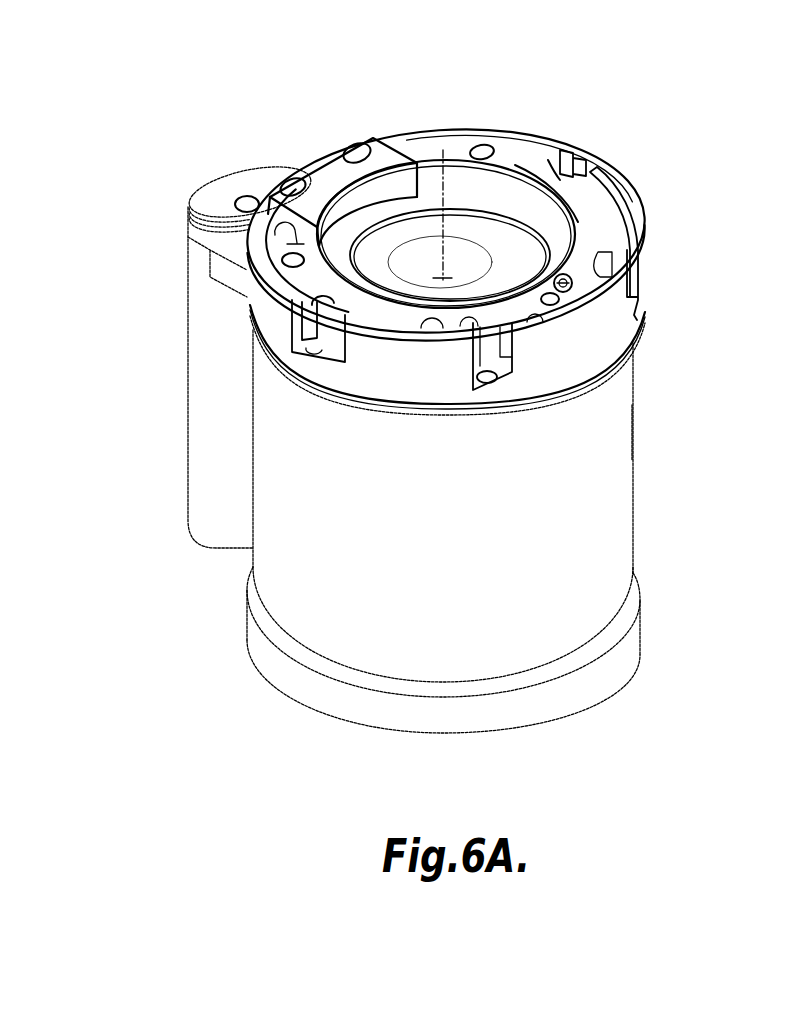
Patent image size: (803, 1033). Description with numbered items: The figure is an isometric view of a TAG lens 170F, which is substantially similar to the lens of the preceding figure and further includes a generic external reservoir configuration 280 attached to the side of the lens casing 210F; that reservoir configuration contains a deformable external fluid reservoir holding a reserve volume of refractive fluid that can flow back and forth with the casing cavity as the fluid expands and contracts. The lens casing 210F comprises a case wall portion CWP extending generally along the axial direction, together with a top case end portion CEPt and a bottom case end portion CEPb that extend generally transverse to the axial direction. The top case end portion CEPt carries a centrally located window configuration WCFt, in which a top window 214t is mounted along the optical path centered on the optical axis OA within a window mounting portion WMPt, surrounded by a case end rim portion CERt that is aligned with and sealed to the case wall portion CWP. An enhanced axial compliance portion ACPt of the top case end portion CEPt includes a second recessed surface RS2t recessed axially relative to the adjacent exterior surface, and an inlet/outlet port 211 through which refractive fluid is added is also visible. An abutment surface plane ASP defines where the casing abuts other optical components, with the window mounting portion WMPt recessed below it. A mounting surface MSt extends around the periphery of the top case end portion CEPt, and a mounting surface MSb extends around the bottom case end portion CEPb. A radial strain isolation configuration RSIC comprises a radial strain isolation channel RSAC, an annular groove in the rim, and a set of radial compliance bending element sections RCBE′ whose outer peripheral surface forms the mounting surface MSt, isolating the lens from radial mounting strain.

The TAG lens 170F is at (636, 68).
The window configuration WCFt is at (513, 70).
The top window 214t is at (460, 278).
The window mounting portion WMPt is at (500, 250).
The enhanced axial compliance portion ACPt is at (538, 222).
The case end rim portion CERt is at (553, 193).
The second recessed surface RS2t is at (564, 280).
The inlet/outlet port 211 is at (548, 258).
The top case end portion CEPt is at (644, 235).
The external reservoir configuration 280 is at (224, 171).
The abutment surface plane ASP is at (272, 215).
The optical axis OA is at (440, 242).
The mounting surface MSt is at (362, 360).
The radial strain isolation configuration RSIC is at (348, 460).
The radial strain isolation channel RSAC is at (457, 339).
The radial compliance bending element sections RCBE′ is at (551, 321).
The lens casing 210F is at (638, 464).
The case wall portion CWP is at (648, 323).
The bottom case end portion CEPb is at (651, 583).
The mounting surface MSb is at (323, 680).